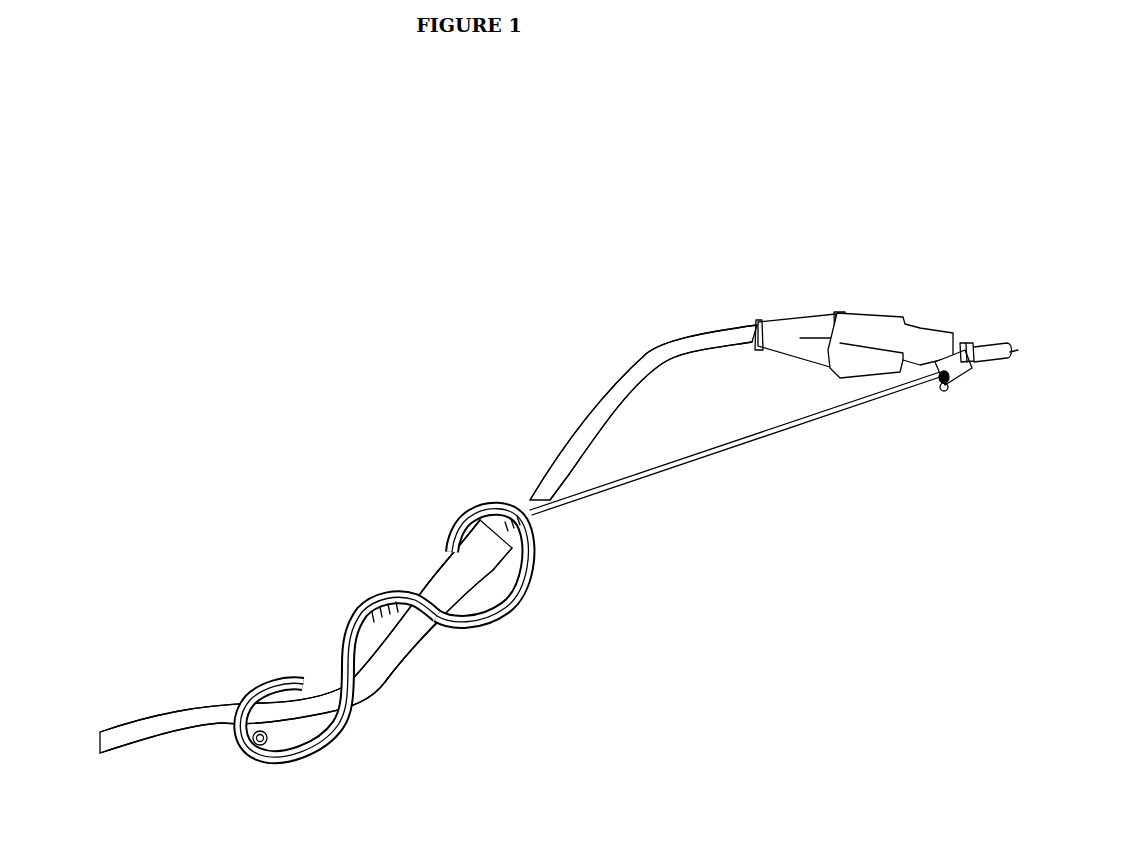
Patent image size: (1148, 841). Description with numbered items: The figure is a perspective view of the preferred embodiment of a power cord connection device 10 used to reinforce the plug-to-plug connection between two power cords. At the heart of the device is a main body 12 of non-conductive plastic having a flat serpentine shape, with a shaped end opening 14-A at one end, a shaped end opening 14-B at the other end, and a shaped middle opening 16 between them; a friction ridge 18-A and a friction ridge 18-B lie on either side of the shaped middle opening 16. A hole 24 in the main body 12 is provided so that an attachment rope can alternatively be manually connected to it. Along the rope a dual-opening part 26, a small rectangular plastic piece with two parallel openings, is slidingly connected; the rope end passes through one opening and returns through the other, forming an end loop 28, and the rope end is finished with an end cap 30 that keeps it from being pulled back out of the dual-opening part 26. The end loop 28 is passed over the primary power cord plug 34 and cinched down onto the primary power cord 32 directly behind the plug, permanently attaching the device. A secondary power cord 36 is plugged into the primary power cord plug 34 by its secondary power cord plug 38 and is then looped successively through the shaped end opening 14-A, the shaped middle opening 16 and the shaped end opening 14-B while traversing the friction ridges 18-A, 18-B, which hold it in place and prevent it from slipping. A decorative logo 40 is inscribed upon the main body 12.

The power cord connection device 10 is at (373, 175).
The main body 12 is at (361, 591).
The shaped end opening 14-A is at (474, 537).
The shaped end opening 14-B is at (303, 683).
The shaped middle opening 16 is at (413, 653).
The friction ridge 18-A is at (458, 637).
The friction ridge 18-B is at (398, 705).
The hole 24 is at (247, 757).
The dual-opening part 26 is at (962, 393).
The end loop 28 is at (964, 343).
The end cap 30 is at (942, 393).
The primary power cord 32 is at (1003, 343).
The primary power cord plug 34 is at (913, 313).
The secondary power cord 36 is at (637, 363).
The secondary power cord plug 38 is at (805, 328).
The decorative logo 40 is at (357, 613).